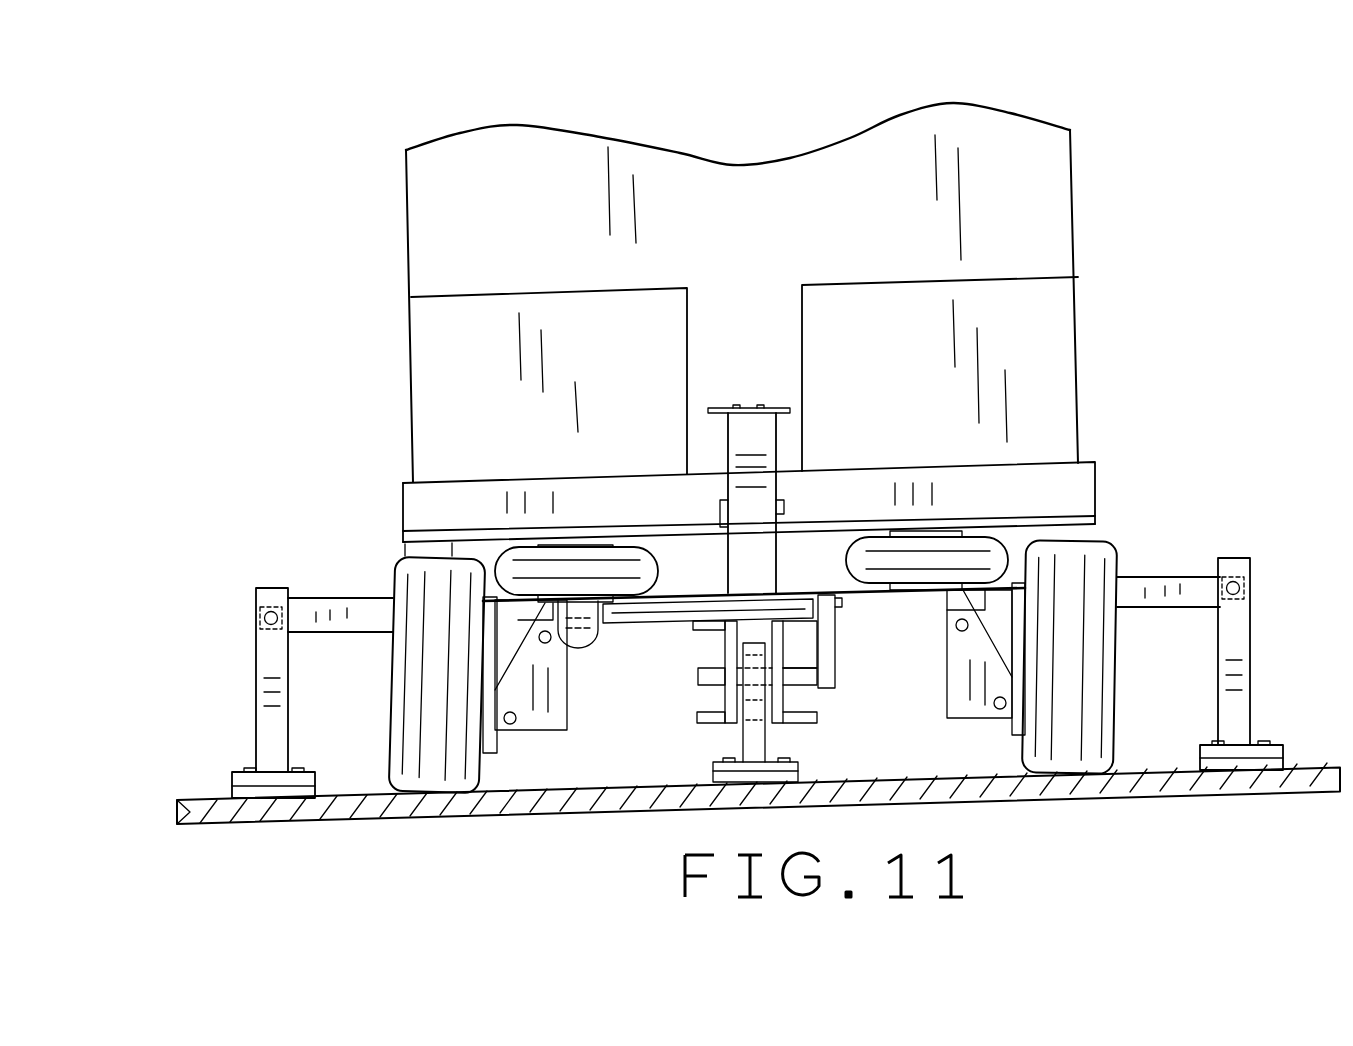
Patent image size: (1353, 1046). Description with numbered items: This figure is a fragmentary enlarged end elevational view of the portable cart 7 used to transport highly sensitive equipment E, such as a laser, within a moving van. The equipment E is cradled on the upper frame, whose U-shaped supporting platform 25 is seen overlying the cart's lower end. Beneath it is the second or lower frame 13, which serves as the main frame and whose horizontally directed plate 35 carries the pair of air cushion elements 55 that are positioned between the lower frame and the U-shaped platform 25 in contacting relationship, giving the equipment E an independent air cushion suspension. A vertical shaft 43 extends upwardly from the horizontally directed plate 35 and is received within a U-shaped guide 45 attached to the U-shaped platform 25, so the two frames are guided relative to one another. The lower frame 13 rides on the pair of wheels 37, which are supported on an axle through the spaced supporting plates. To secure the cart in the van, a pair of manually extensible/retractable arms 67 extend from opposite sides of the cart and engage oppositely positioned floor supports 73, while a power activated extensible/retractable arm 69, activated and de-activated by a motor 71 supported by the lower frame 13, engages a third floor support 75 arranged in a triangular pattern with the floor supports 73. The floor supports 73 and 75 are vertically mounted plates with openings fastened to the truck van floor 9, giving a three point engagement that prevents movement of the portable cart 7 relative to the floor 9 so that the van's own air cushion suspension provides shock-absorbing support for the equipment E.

The highly sensitive equipment E is at (757, 228).
The portable cart 7 is at (1096, 204).
The vertical shaft 43 is at (775, 360).
The U-shaped guide 45 is at (790, 505).
The air cushion elements 55 is at (575, 565).
The U-shaped supporting platform 25 is at (1050, 490).
The horizontally directed plate 35 is at (876, 603).
The second or lower frame 13 is at (907, 630).
The motor 71 is at (658, 607).
The power activated extensible/retractable arm 69 is at (712, 677).
The floor support 75 is at (753, 737).
The wheels 37 is at (440, 770).
The manually extensible/retractable arms 67 is at (350, 610).
The floor supports 73 is at (273, 722).
The floor 9 is at (985, 787).